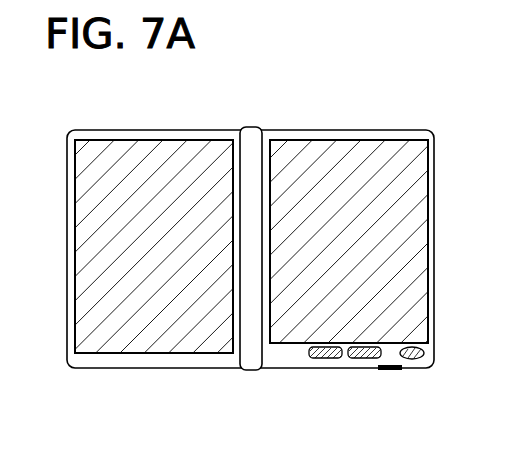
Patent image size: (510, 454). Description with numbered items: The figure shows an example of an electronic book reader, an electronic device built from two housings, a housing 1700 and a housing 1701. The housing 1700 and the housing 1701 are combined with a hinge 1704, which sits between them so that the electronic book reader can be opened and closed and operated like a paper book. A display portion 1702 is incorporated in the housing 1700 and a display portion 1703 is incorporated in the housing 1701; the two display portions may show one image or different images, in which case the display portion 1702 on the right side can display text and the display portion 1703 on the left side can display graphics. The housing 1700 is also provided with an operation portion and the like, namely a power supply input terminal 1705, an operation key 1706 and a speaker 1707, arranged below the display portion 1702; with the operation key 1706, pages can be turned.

The housing 1700 is at (394, 131).
The housing 1701 is at (179, 140).
The display portion 1702 is at (313, 141).
The display portion 1703 is at (118, 158).
The hinge 1704 is at (250, 370).
The power supply input terminal 1705 is at (384, 370).
The operation key 1706 is at (329, 360).
The speaker 1707 is at (410, 363).